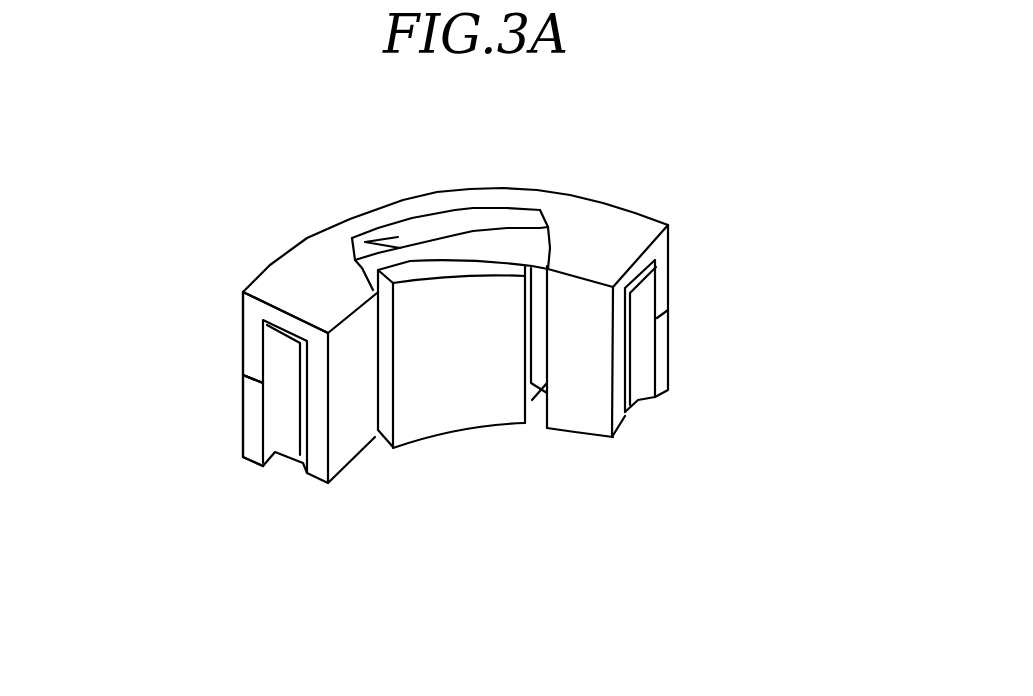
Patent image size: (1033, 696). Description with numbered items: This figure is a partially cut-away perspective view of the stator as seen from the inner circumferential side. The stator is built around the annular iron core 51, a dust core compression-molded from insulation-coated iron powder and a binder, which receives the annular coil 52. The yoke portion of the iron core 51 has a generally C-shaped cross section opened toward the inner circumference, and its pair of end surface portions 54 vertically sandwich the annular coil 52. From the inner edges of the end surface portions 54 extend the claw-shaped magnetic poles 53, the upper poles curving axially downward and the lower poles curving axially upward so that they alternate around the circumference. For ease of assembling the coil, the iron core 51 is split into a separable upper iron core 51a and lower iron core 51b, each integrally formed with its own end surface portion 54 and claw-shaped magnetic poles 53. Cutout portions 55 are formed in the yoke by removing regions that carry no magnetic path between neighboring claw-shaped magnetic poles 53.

The iron core 51 is at (95, 321).
The upper iron core 51a is at (226, 343).
The lower iron core 51b is at (226, 429).
The annular coil 52 is at (467, 243).
The claw-shaped magnetic pole 53 is at (508, 307).
The end surface portion 54 is at (615, 234).
The cutout portion 55 is at (405, 240).